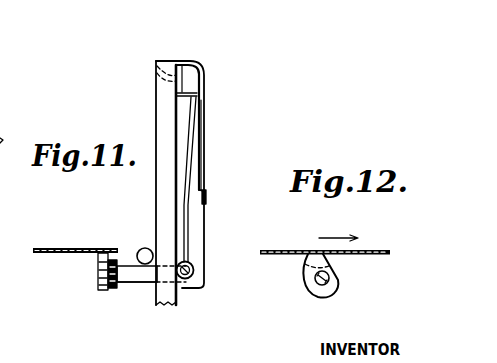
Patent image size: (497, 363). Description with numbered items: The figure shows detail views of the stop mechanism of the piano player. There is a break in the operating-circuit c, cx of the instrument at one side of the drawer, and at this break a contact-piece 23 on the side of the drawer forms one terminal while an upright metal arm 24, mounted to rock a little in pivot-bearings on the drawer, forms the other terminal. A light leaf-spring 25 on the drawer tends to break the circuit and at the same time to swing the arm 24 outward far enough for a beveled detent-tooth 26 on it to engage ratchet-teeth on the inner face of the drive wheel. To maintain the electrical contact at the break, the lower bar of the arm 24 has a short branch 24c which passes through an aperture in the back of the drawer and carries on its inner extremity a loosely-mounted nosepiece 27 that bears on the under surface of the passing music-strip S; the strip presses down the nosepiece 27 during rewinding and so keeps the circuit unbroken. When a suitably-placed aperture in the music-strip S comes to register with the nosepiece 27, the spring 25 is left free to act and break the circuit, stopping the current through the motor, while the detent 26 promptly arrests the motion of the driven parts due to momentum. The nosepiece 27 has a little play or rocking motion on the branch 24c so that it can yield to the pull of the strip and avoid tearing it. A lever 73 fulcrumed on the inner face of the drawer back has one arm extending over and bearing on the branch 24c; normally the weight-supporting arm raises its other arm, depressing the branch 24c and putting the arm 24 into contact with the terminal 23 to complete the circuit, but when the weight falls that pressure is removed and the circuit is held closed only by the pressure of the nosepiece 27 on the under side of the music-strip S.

In FIG. 11, the contact-piece 23 is at (204, 73).
In FIG. 11, the upright metal arm 24 is at (194, 161).
In FIG. 11, the leaf-spring 25 is at (205, 111).
In FIG. 11, the detent-tooth 26 is at (206, 193).
In FIG. 11, the nosepiece 27 is at (98, 277).
In FIG. 12, the nosepiece 27 is at (333, 269).
In FIG. 11, the lever 73 is at (142, 249).
In FIG. 11, the short branch 24c is at (145, 283).
In FIG. 11, the music-strip S is at (87, 248).
In FIG. 12, the music-strip S is at (311, 250).
In FIG. 11, the operating-circuit c is at (157, 78).
In FIG. 11, the operating-circuit cx is at (155, 62).